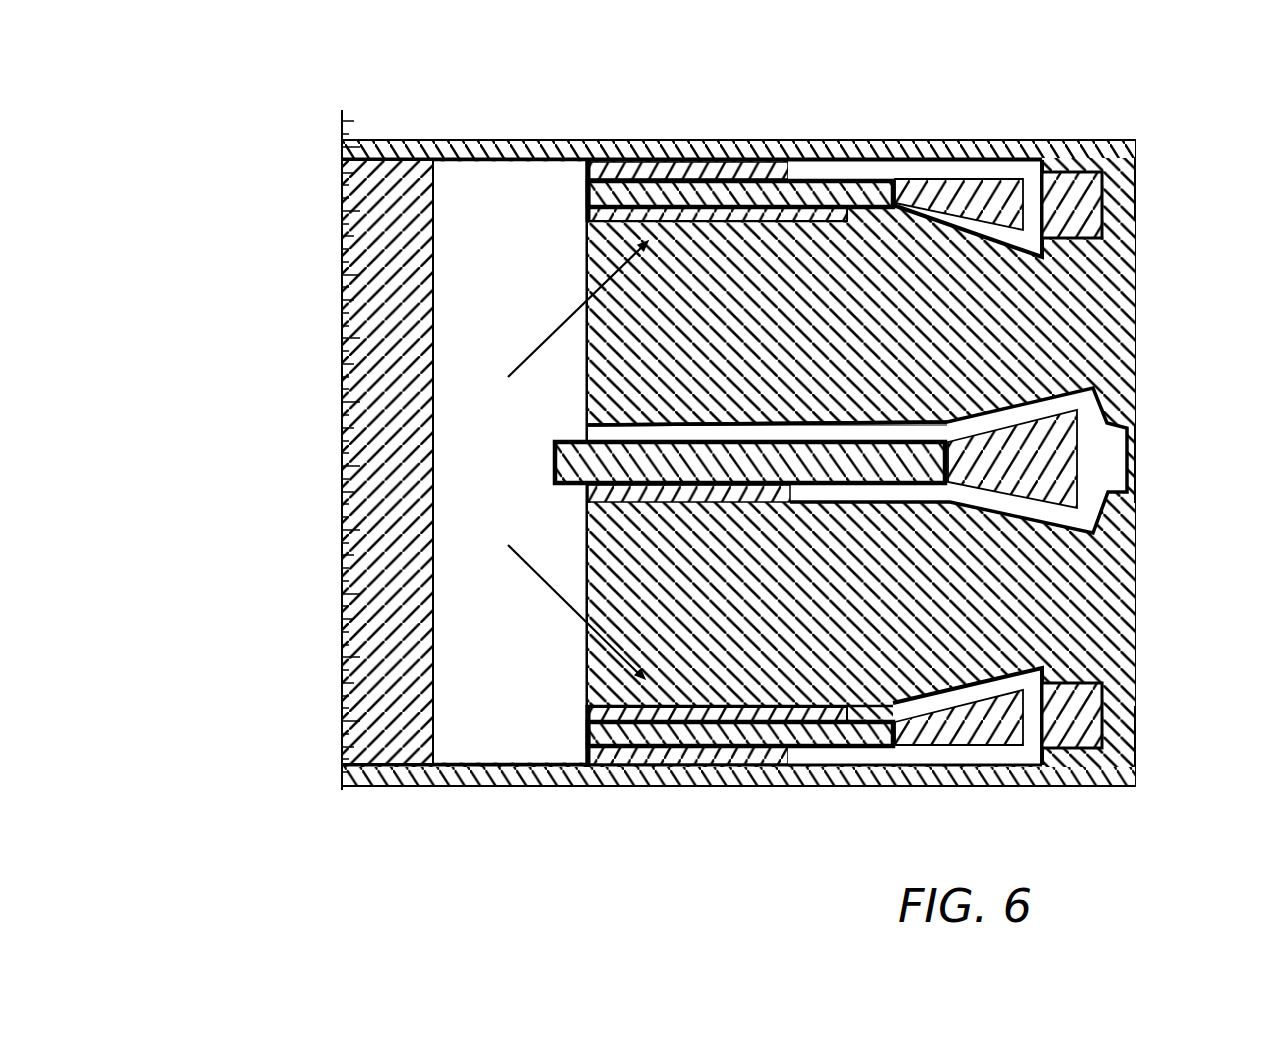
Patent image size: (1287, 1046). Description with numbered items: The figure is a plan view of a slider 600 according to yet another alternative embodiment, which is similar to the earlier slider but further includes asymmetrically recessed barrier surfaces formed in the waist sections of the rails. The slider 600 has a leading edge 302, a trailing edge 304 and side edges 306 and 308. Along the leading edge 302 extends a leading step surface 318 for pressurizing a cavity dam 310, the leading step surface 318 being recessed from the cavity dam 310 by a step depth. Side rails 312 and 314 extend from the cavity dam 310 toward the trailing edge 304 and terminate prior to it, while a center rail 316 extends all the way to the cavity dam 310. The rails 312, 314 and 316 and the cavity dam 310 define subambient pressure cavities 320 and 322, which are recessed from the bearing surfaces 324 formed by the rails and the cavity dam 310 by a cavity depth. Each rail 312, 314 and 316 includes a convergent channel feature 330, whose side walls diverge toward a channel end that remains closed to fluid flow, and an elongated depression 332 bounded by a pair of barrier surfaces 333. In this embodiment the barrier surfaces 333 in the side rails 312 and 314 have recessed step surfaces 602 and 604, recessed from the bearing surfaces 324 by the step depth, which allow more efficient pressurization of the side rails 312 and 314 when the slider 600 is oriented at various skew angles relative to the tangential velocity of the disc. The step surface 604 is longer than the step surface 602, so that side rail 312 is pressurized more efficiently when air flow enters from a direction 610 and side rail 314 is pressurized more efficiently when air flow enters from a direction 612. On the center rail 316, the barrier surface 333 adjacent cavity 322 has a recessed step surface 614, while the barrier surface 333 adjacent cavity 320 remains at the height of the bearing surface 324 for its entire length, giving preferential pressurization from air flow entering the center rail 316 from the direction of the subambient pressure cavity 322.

The slider 600 is at (213, 166).
The leading edge 302 is at (342, 690).
The trailing edge 304 is at (1140, 652).
The side edge 306 is at (548, 140).
The side edge 308 is at (462, 787).
The cavity dam 310 is at (497, 212).
The side rail 312 is at (612, 157).
The side rail 314 is at (612, 790).
The center rail 316 is at (628, 422).
The leading step surface 318 is at (375, 323).
The subambient pressure cavity 320 is at (800, 335).
The subambient pressure cavity 322 is at (803, 610).
The bearing surface 324 is at (932, 176).
The convergent channel feature 330 is at (1006, 195).
The elongated depression 332 is at (851, 185).
The barrier surface 333 is at (803, 170).
The recessed step surface 602 is at (710, 168).
The recessed step surface 604 is at (668, 210).
The direction 610 is at (538, 348).
The direction 612 is at (537, 575).
The recessed step surface 614 is at (668, 500).